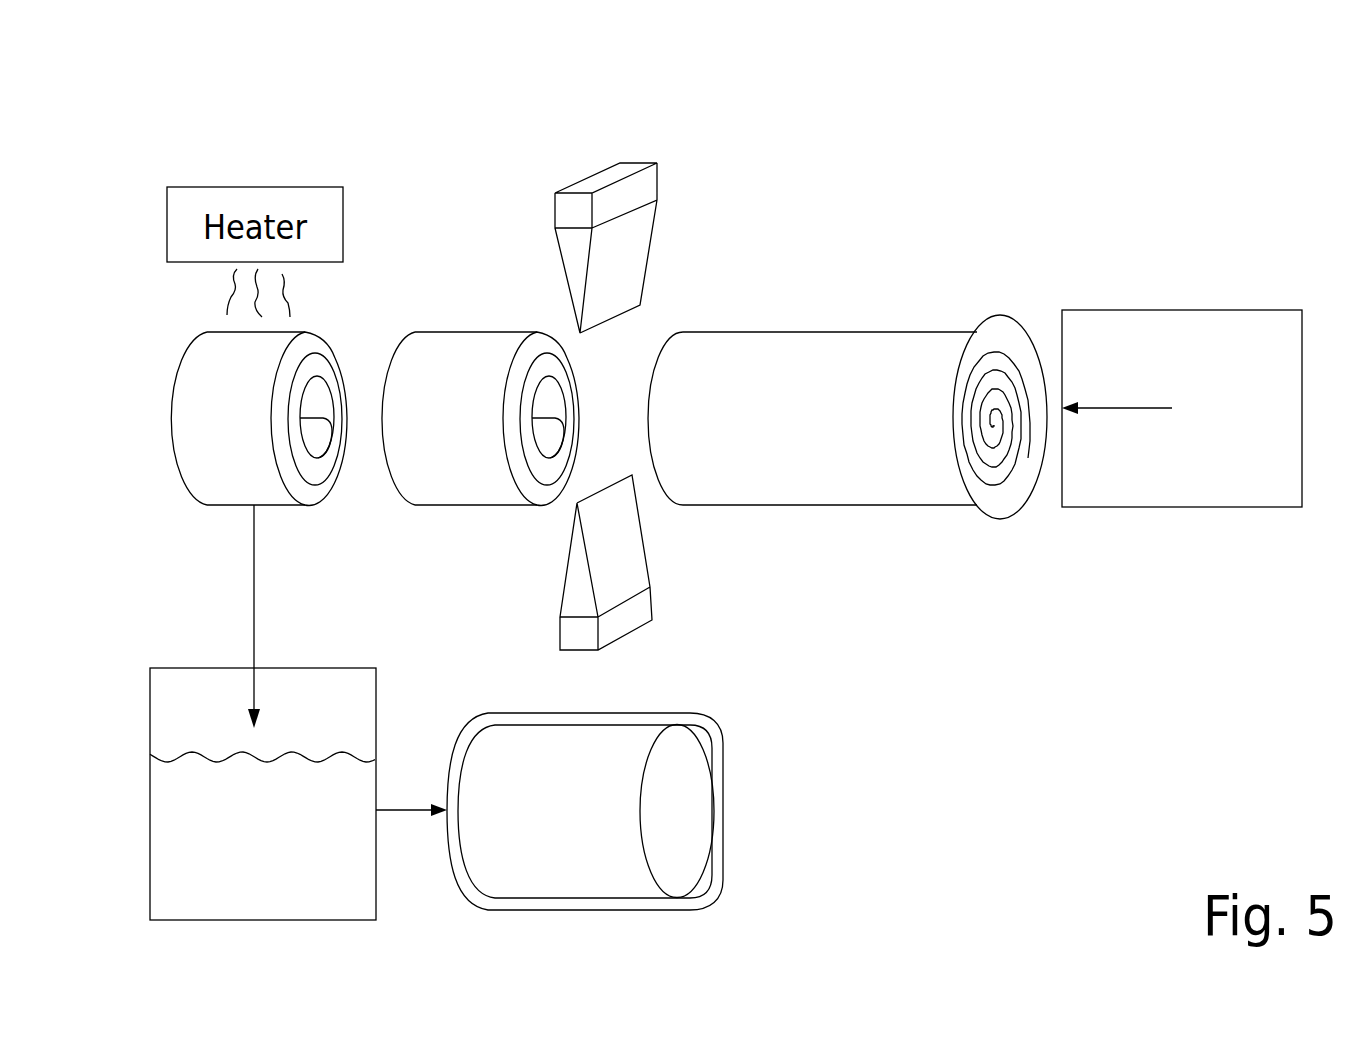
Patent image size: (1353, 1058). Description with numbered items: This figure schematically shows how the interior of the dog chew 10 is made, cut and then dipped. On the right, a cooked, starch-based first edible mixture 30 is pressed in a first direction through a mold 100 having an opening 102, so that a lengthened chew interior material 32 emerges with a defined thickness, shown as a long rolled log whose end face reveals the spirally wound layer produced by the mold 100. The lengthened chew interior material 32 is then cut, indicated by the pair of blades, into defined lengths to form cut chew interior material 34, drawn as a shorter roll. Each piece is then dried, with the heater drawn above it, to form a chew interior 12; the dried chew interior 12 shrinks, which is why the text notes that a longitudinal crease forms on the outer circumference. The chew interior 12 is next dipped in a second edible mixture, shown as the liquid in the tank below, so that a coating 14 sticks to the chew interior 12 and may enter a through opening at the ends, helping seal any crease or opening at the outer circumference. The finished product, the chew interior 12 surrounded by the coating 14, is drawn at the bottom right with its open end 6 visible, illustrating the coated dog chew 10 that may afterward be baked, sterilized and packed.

The dog chew 10 is at (143, 84).
The chew interior 12 is at (165, 412).
The cut chew interior material 34 is at (472, 332).
The lengthened chew interior material 32 is at (838, 332).
The mold 100 is at (1013, 338).
The opening 102 is at (995, 357).
The first edible mixture 30 is at (1205, 420).
The coating 14 is at (657, 714).
The container opening 6 is at (703, 820).